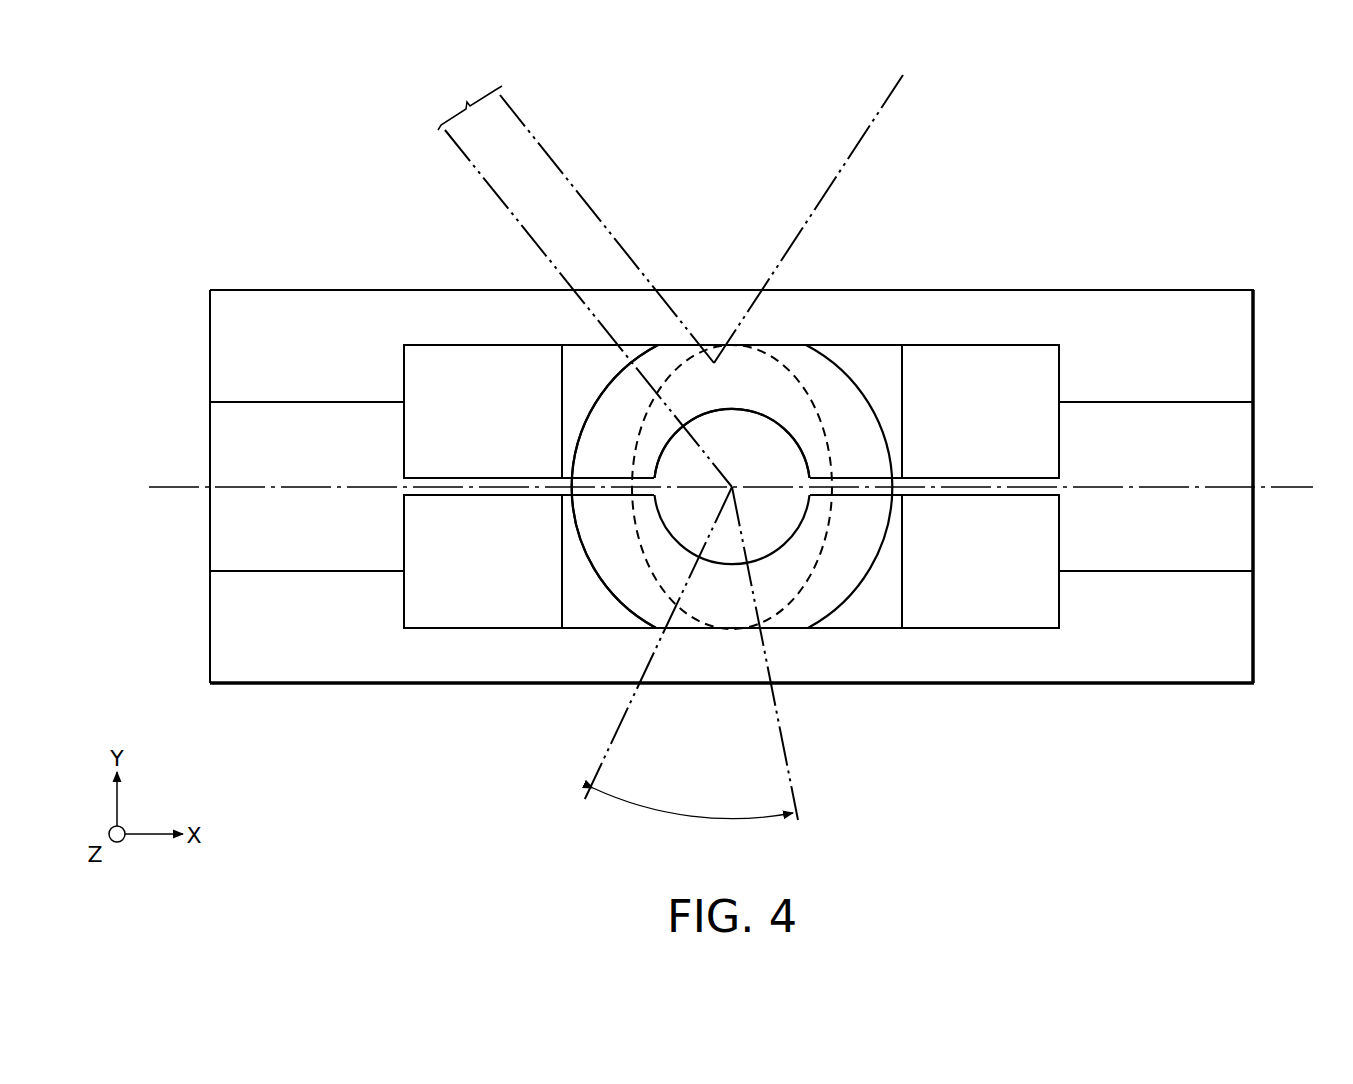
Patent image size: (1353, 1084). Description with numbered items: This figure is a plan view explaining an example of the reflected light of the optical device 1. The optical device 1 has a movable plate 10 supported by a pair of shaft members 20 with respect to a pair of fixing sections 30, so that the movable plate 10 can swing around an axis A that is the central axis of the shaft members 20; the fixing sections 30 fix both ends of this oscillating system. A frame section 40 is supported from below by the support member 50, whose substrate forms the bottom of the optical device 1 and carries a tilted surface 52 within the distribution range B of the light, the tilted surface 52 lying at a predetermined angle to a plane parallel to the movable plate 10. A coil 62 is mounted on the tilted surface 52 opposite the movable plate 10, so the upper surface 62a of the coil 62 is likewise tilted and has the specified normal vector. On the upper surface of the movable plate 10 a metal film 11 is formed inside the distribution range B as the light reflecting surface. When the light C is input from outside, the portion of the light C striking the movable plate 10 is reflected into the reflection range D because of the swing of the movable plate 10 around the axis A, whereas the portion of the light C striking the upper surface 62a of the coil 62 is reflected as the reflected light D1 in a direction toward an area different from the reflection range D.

The optical device 1 is at (1134, 166).
The movable plate 10 is at (717, 569).
The metal film 11 is at (728, 427).
The shaft members 20 is at (470, 485).
The fixing sections 30 is at (225, 448).
The frame section 40 is at (425, 305).
The support member 50 is at (350, 688).
The tilted surface 52 is at (890, 568).
The coil 62 is at (606, 580).
The upper surface of the coil 62a is at (615, 417).
The axis A is at (184, 489).
The distribution range B is at (807, 390).
The light C is at (585, 280).
The reflection range D is at (690, 670).
The reflected light D1 is at (868, 134).